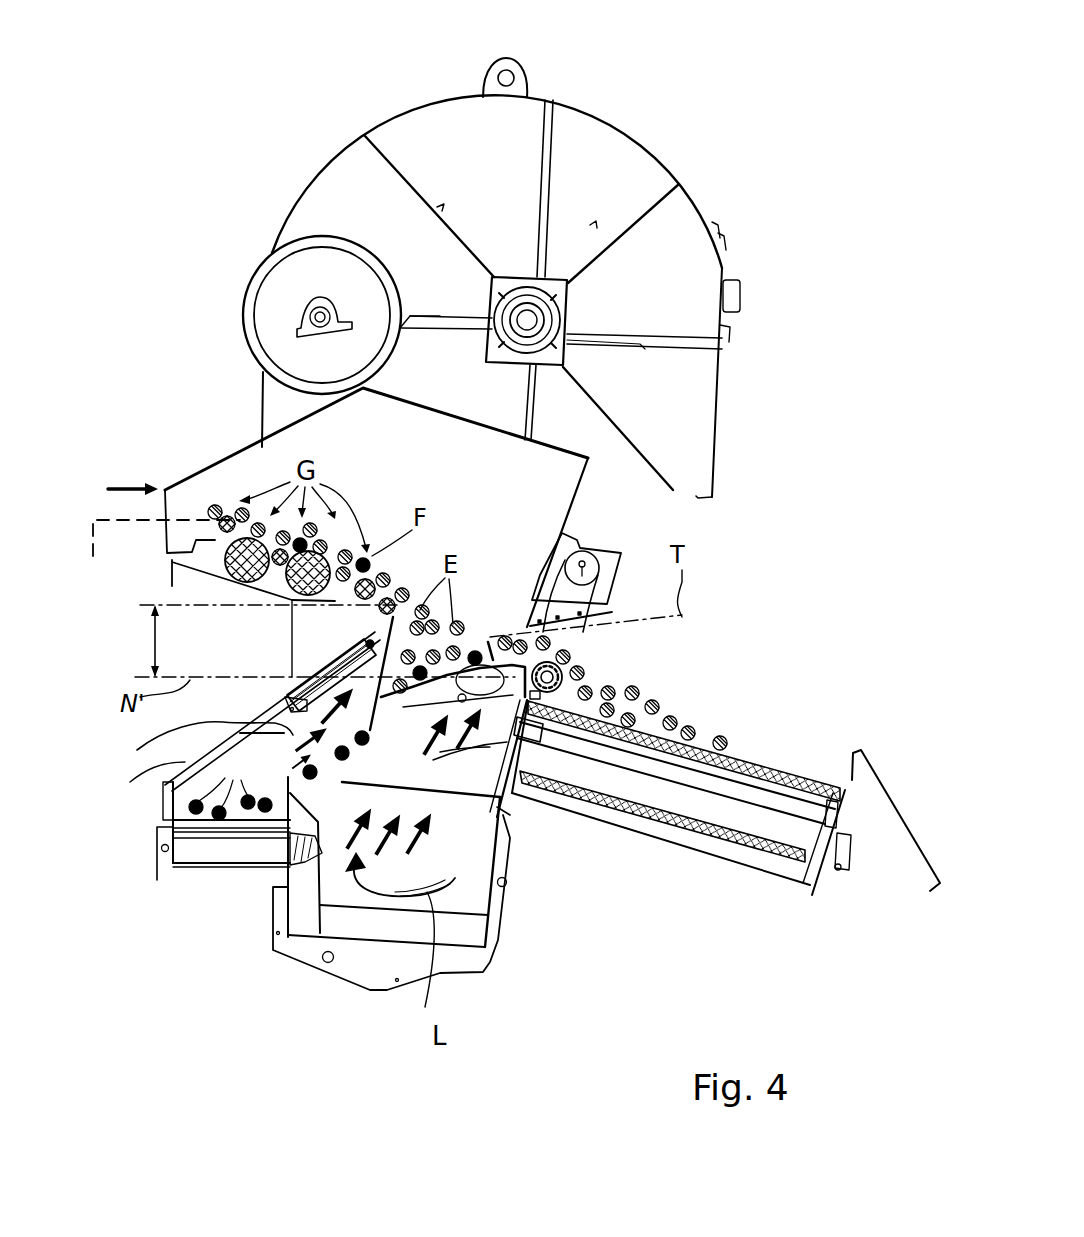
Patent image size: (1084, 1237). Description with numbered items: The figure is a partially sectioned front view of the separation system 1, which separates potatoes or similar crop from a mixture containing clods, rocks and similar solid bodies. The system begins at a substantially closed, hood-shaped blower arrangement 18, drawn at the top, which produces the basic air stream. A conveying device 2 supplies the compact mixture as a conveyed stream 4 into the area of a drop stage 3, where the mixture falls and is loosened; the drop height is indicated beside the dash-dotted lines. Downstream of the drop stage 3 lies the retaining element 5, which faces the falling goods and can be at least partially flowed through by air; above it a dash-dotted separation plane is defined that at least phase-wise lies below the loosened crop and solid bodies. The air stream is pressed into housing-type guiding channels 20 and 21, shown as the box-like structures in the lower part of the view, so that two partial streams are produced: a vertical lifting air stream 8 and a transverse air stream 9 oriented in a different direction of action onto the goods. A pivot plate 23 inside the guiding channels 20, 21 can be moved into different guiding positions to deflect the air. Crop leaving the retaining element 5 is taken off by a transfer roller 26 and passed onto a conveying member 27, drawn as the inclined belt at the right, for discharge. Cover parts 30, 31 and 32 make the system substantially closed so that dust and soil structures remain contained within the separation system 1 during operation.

The separation system 1 is at (763, 94).
The conveying device 2 is at (148, 568).
The drop stage 3 is at (153, 640).
The conveyed stream 4 is at (128, 485).
The retaining element 5 is at (487, 637).
The lifting air stream 8 is at (512, 783).
The transverse air stream 9 is at (240, 735).
The blower arrangement 18 is at (588, 118).
The guiding channel 20 is at (475, 880).
The guiding channel 21 is at (290, 778).
The pivot plate 23 is at (338, 656).
The transfer roller 26 is at (590, 690).
The conveying member 27 is at (790, 755).
The cover part 30 is at (292, 416).
The cover part 31 is at (258, 782).
The cover part 32 is at (614, 604).